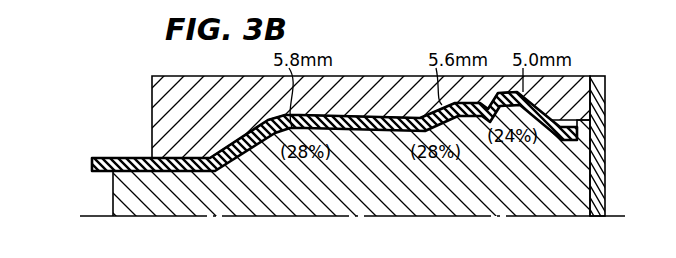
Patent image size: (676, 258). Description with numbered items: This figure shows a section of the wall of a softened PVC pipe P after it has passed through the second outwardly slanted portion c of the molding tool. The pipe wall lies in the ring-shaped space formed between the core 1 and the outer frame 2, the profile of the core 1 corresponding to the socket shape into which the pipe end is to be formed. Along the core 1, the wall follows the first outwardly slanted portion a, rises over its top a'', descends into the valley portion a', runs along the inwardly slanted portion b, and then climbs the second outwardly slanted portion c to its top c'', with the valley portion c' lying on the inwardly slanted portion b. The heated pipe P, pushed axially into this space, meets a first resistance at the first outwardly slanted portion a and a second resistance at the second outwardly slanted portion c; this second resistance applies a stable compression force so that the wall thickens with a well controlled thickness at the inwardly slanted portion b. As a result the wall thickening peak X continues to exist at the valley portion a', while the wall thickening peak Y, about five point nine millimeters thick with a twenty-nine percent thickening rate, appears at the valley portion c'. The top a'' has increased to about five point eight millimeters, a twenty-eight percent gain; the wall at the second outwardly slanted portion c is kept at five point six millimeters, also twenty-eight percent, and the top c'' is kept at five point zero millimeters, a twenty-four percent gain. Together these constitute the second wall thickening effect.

The core 1 is at (148, 190).
The outer frame 2 is at (200, 102).
The softened pipe P is at (115, 165).
The wall thickening peak X is at (172, 156).
The wall thickening peak Y is at (400, 118).
The first outwardly slanted portion a is at (262, 202).
The valley portion a' is at (173, 210).
The top of the first outwardly slanted portion a'' is at (296, 190).
The inwardly slanted portion b is at (371, 137).
The second outwardly slanted portion c is at (474, 190).
The valley portion c' is at (426, 187).
The top of the second outwardly slanted portion c'' is at (513, 179).